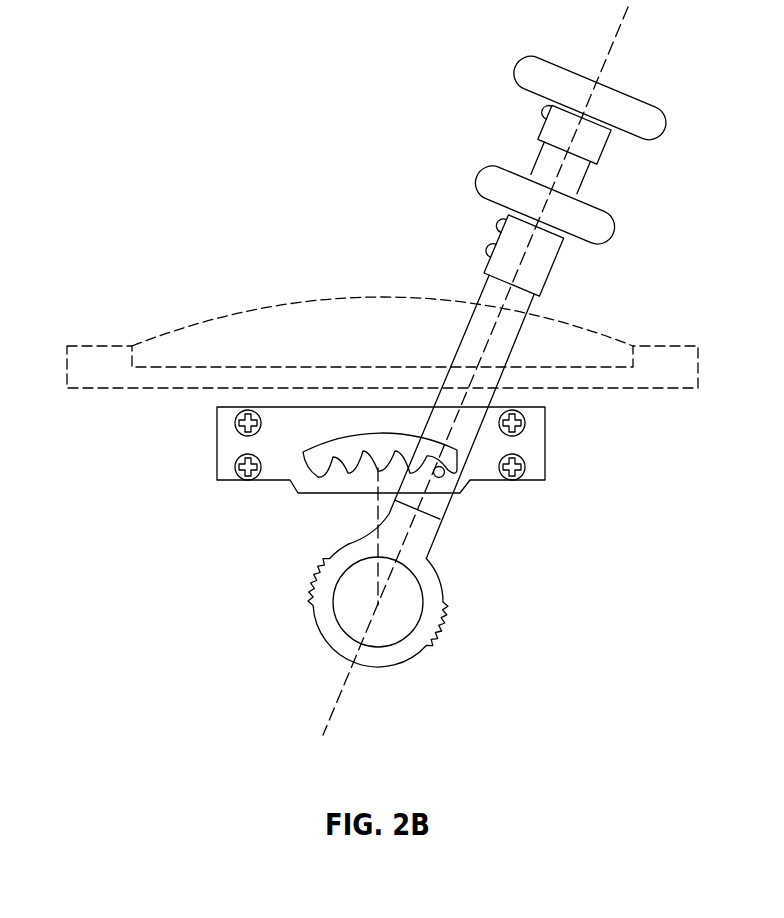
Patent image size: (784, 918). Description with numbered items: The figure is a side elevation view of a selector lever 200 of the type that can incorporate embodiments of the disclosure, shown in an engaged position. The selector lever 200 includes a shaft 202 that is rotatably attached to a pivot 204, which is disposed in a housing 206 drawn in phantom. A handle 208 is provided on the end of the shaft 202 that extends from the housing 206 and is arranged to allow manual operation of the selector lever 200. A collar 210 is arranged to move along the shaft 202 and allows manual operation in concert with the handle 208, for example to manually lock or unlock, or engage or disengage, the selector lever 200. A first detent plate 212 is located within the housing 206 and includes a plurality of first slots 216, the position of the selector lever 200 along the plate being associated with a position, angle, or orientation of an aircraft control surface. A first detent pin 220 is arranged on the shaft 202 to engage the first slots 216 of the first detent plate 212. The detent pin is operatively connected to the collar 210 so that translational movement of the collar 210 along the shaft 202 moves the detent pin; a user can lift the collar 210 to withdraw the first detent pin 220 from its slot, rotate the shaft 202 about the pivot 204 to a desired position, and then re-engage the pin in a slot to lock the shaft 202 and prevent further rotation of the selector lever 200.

The selector lever 200 is at (362, 159).
The shaft 202 is at (480, 293).
The pivot 204 is at (373, 603).
The housing 206 is at (682, 363).
The handle 208 is at (638, 89).
The collar 210 is at (597, 203).
The first detent plate 212 is at (528, 440).
The first slots 216 is at (348, 458).
The first detent pin 220 is at (447, 475).